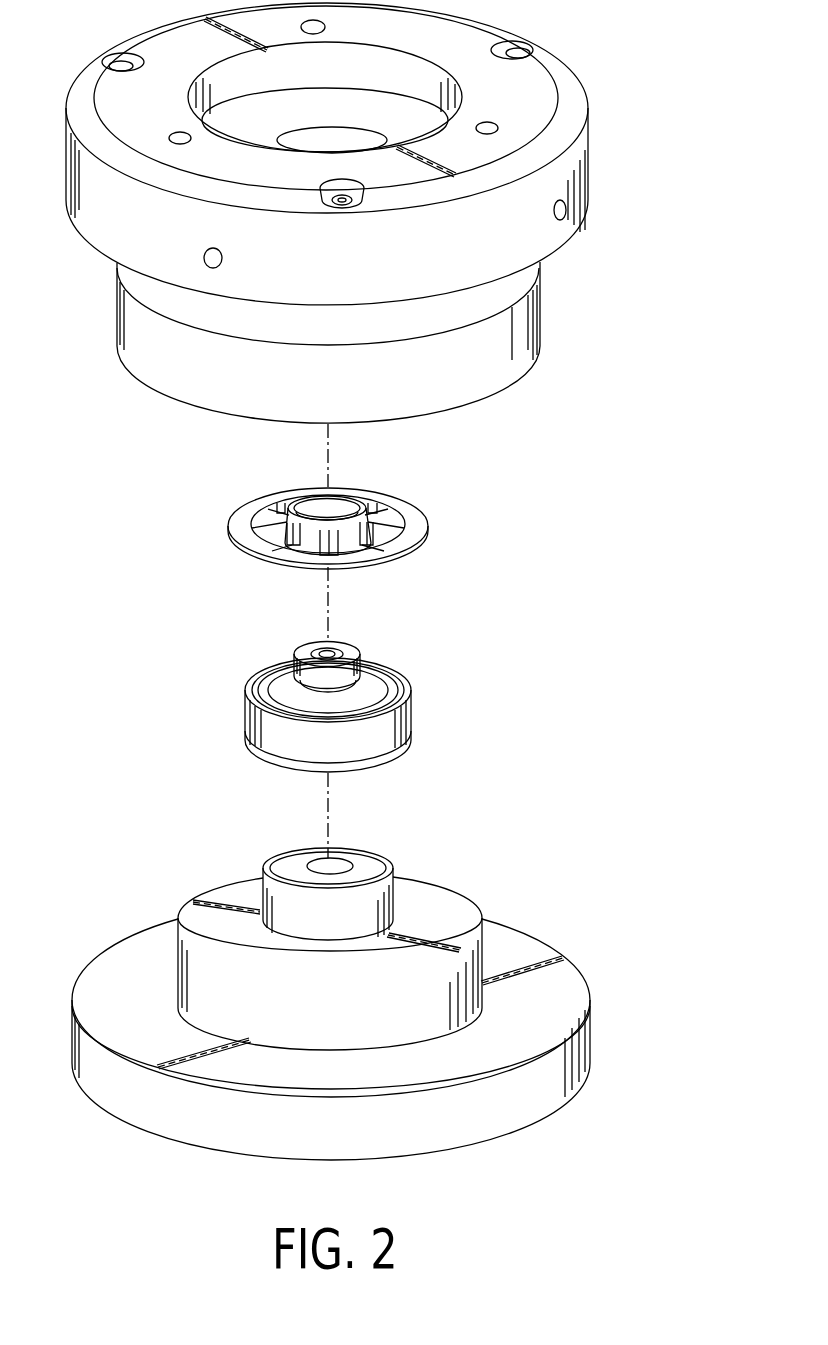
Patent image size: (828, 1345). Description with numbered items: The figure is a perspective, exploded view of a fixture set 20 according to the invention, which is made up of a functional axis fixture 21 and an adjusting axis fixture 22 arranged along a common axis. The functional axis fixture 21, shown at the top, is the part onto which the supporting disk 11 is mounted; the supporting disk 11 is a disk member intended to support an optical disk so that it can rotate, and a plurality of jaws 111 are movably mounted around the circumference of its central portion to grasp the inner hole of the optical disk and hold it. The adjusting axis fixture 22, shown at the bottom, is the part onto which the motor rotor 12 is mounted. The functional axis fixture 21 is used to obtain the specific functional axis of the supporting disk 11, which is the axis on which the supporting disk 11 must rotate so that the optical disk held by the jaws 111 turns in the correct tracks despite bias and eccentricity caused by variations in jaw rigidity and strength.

The supporting disk 11 is at (333, 528).
The jaws 111 is at (400, 534).
The motor rotor 12 is at (253, 720).
The housing assembly 20 is at (626, 308).
The functional axis fixture 21 is at (530, 323).
The adjusting axis fixture 22 is at (545, 963).